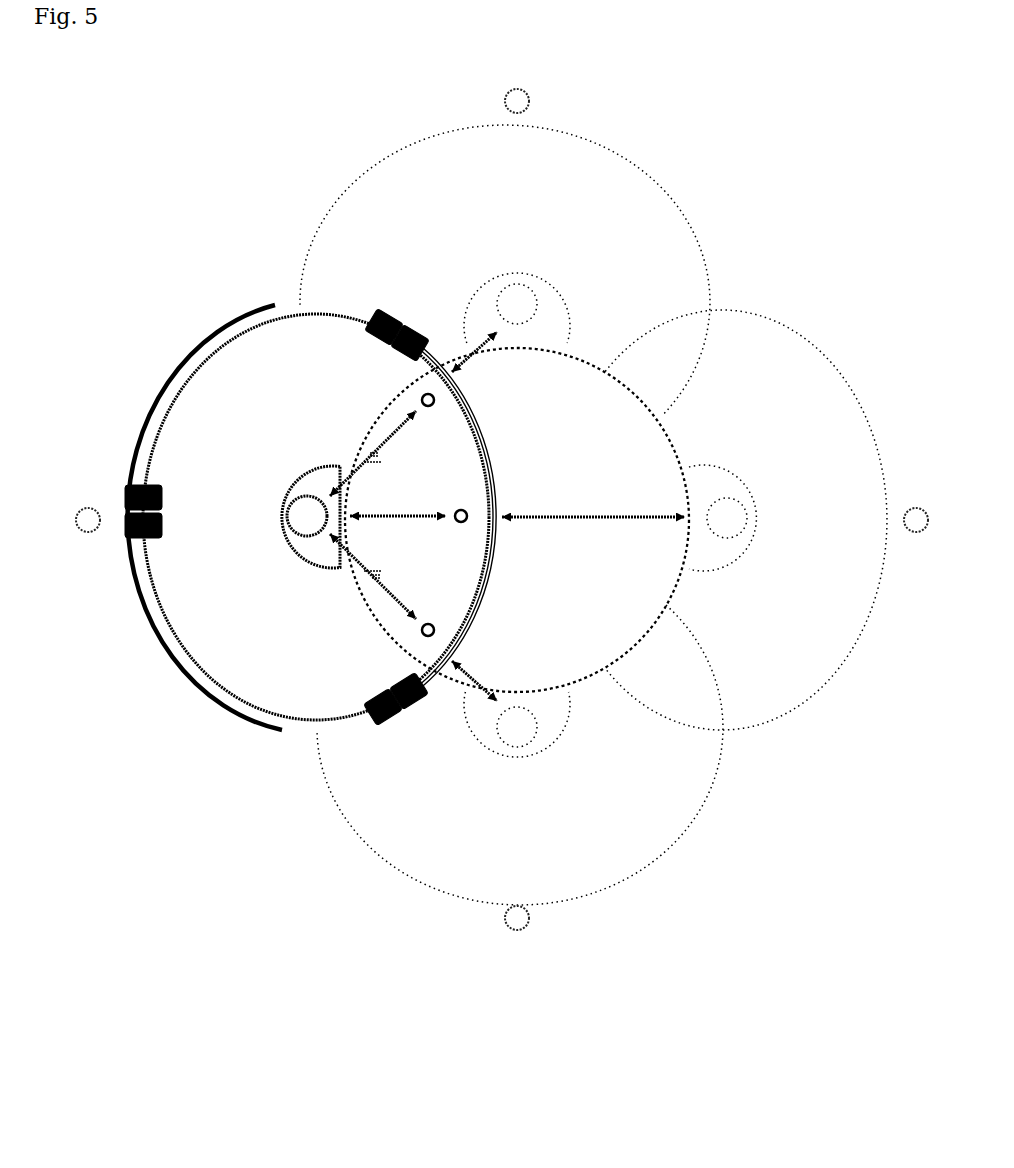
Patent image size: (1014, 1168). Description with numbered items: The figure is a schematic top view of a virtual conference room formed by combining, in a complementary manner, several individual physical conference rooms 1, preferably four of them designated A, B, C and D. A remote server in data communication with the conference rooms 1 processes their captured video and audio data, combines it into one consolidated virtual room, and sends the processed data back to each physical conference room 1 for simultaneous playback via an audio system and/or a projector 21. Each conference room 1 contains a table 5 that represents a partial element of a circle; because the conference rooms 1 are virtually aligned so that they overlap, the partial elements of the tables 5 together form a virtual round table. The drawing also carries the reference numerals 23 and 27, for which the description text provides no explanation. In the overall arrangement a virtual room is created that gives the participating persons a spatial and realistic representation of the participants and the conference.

The conference room 1 is at (158, 375).
The table 5 is at (363, 493).
The projector 21 is at (372, 328).
The sensor 23 is at (422, 399).
The rotor positions arrangement 27 is at (760, 273).